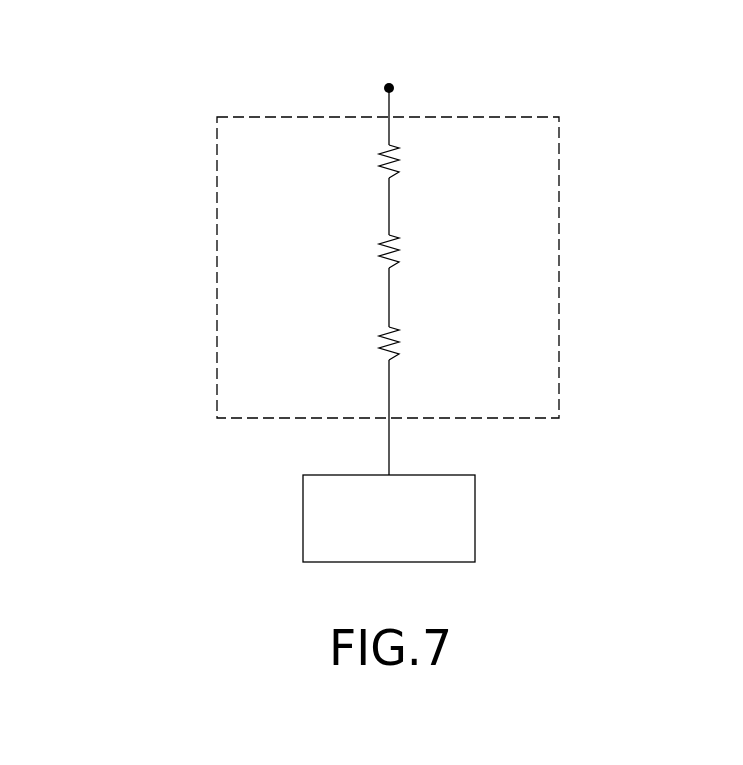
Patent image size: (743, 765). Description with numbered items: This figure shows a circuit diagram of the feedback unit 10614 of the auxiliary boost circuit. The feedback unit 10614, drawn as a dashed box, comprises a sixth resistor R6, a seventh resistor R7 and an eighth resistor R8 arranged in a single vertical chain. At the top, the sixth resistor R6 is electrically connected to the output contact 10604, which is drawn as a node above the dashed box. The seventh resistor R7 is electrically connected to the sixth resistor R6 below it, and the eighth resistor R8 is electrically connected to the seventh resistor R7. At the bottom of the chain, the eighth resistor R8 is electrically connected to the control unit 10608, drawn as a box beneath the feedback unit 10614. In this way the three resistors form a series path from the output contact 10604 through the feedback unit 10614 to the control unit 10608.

The output contact 10604 is at (389, 84).
The feedback unit 10614 is at (460, 296).
The control unit 10608 is at (360, 482).
The sixth resistor R6 is at (372, 161).
The seventh resistor R7 is at (372, 251).
The eighth resistor R8 is at (372, 343).